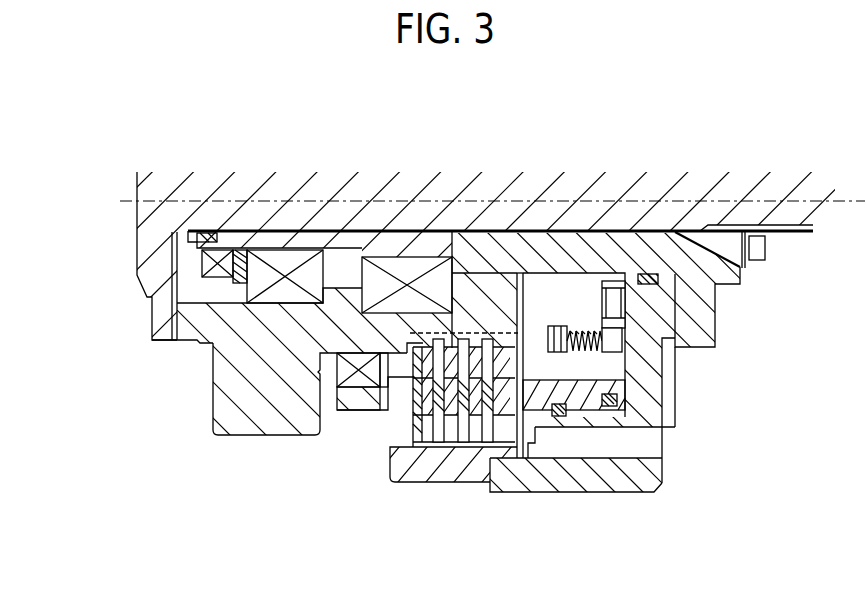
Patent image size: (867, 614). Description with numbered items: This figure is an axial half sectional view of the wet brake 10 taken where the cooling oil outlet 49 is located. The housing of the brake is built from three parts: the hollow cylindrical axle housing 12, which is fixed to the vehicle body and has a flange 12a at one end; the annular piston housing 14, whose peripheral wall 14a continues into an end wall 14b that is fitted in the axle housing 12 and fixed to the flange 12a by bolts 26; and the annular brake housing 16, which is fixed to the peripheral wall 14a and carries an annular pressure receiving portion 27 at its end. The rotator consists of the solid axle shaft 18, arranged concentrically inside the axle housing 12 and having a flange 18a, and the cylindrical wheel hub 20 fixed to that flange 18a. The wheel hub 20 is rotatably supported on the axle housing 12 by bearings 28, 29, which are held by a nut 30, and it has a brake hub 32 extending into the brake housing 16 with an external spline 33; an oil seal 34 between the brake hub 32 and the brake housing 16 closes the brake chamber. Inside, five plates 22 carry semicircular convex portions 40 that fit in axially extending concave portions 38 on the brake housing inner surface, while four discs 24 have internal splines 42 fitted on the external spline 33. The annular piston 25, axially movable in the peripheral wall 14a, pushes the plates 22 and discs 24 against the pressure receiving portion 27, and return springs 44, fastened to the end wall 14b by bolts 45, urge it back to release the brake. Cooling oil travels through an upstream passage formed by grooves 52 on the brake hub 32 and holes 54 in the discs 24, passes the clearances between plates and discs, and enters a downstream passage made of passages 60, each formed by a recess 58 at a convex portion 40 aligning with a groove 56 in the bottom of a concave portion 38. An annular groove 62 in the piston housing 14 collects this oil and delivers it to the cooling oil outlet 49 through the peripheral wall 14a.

The wet brake 10 is at (216, 475).
The axle housing 12 is at (637, 247).
The flange 12a is at (712, 337).
The piston housing 14 is at (655, 492).
The peripheral wall 14a is at (562, 487).
The end wall 14b is at (680, 313).
The brake housing 16 is at (470, 487).
The axle shaft 18 is at (137, 243).
The flange 18a is at (150, 312).
The wheel hub 20 is at (213, 360).
The plates 22 is at (410, 465).
The discs 24 is at (491, 491).
The piston 25 is at (600, 410).
The bolts 26 is at (608, 330).
The pressure receiving portion 27 is at (410, 400).
The bearing 28 is at (283, 248).
The bearing 29 is at (402, 270).
The nut 30 is at (210, 263).
The brake hub 32 is at (498, 300).
The external spline 33 is at (395, 395).
The oil seal 34 is at (338, 372).
The concave portions 38 is at (440, 445).
The convex portions 40 is at (425, 440).
The internal spline 42 is at (472, 300).
The return springs 44 is at (612, 281).
The bolts 45 is at (585, 328).
The cooling oil outlet 49 is at (655, 440).
The grooves 52 is at (428, 300).
The holes 54 is at (540, 322).
The groove 56 is at (477, 452).
The recess 58 is at (512, 455).
The passages 60 is at (455, 450).
The annular groove 62 is at (532, 420).